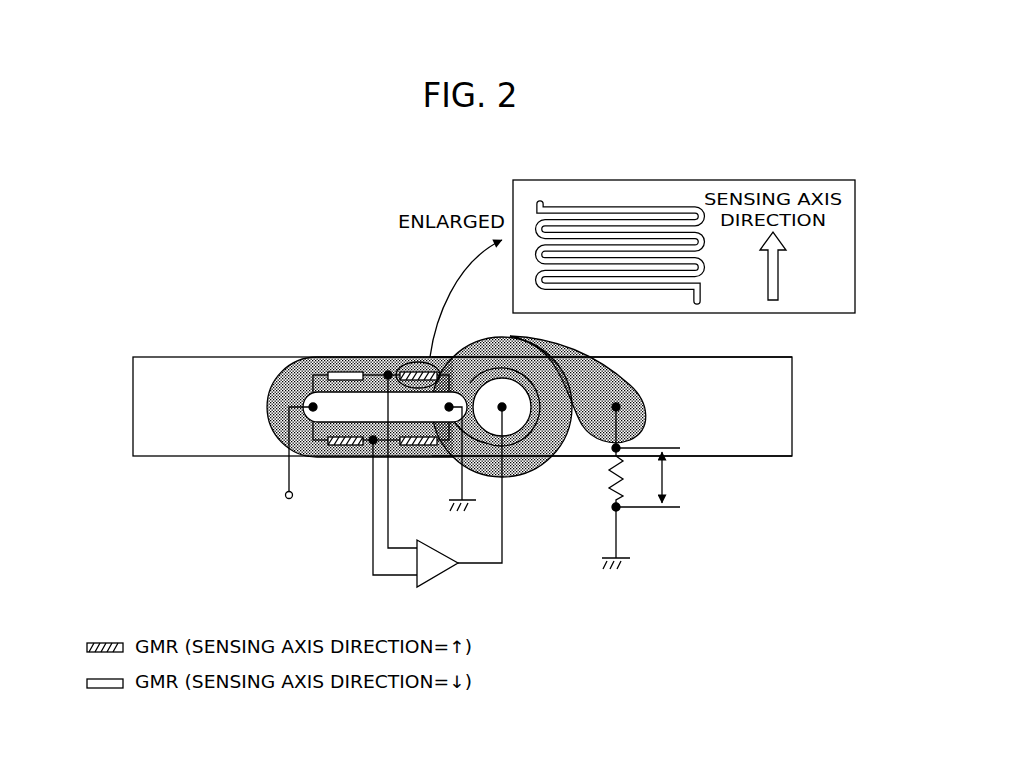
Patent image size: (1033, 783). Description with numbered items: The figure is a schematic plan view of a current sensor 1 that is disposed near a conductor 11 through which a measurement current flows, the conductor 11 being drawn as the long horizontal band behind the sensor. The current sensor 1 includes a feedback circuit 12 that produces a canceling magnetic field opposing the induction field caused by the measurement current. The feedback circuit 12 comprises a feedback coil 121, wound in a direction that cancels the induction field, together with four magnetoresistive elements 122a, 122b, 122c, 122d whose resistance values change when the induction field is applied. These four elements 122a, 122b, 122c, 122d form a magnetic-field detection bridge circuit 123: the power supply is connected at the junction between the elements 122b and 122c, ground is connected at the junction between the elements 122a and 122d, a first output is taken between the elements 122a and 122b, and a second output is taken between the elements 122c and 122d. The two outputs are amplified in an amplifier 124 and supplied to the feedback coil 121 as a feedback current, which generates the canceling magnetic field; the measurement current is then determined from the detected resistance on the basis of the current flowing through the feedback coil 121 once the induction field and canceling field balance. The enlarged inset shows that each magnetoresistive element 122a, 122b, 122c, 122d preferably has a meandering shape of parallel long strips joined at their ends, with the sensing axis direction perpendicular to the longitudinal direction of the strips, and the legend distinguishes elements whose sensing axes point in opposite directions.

The current sensor 1 is at (272, 217).
The conductor 11 is at (776, 405).
The feedback circuit 12 is at (275, 289).
The feedback coil 121 is at (517, 478).
The magnetoresistive element 122a is at (416, 447).
The magnetoresistive element 122b is at (342, 447).
The magnetoresistive element 122c is at (334, 357).
The magnetoresistive element 122d is at (401, 357).
The magnetic-field detection bridge circuit 123 is at (362, 344).
The amplifier 124 is at (437, 576).